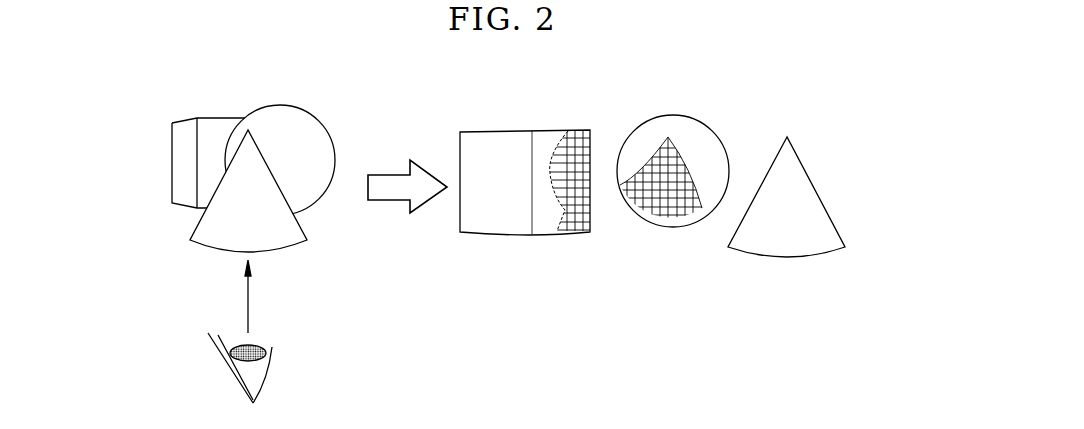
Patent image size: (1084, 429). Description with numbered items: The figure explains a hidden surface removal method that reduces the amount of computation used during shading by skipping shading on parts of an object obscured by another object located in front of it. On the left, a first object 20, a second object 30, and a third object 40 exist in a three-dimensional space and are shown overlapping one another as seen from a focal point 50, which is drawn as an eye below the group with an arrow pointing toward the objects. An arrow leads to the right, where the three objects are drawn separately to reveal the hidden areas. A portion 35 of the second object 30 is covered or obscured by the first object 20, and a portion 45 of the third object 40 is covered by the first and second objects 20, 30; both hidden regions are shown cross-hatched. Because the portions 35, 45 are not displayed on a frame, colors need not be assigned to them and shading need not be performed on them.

The first object 20 is at (205, 225).
The second object 30 is at (278, 103).
The third object 40 is at (223, 115).
The portion of the second object 35 is at (667, 222).
The portion of the third object 45 is at (573, 220).
The focal point 50 is at (227, 368).